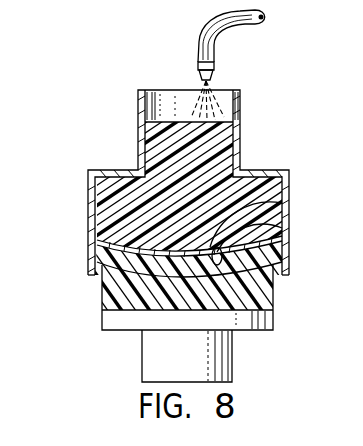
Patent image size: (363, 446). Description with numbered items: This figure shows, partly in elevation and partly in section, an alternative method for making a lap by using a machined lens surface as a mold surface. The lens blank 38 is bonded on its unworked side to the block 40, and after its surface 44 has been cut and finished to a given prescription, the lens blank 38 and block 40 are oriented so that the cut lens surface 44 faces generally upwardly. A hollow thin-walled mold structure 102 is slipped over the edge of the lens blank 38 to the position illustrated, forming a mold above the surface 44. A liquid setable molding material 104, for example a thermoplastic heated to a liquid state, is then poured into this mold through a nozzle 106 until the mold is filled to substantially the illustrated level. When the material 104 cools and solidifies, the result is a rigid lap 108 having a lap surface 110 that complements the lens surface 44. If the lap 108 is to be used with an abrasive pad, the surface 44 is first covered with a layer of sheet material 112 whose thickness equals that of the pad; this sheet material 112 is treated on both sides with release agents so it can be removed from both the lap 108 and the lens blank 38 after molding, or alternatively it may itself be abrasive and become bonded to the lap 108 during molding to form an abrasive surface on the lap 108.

The lens blank 38 is at (102, 273).
The block 40 is at (275, 298).
The machined surface 44 is at (100, 240).
The mold structure 102 is at (243, 123).
The molding material 104 is at (214, 83).
The nozzle 106 is at (216, 33).
The lap 108 is at (218, 157).
The lap surface 110 is at (276, 204).
The sheet material 112 is at (284, 229).